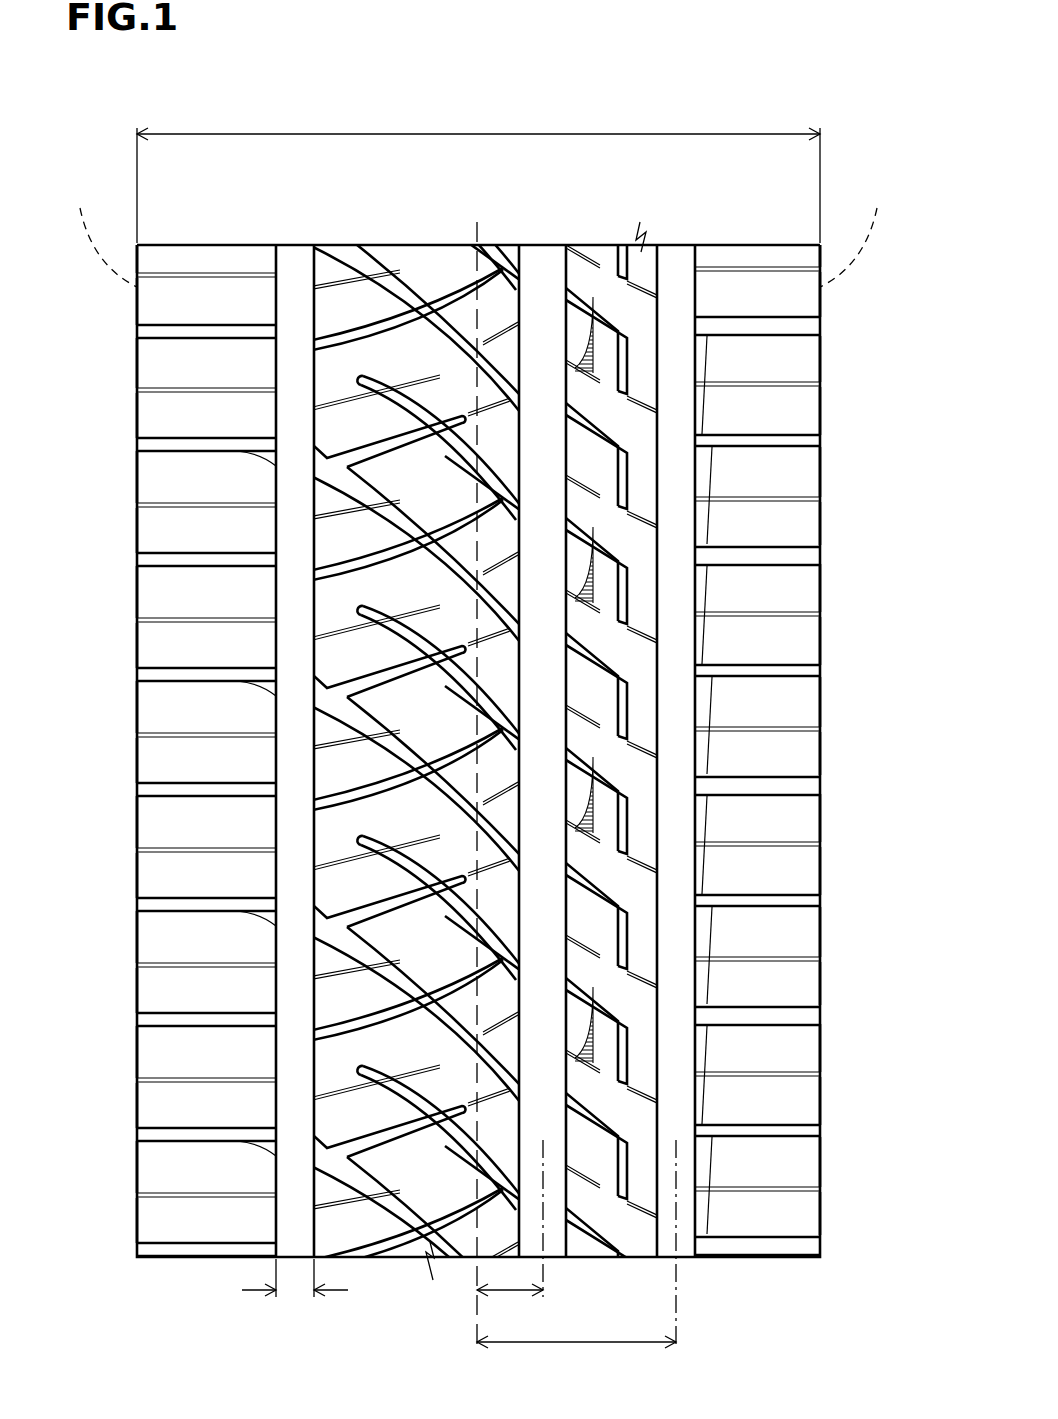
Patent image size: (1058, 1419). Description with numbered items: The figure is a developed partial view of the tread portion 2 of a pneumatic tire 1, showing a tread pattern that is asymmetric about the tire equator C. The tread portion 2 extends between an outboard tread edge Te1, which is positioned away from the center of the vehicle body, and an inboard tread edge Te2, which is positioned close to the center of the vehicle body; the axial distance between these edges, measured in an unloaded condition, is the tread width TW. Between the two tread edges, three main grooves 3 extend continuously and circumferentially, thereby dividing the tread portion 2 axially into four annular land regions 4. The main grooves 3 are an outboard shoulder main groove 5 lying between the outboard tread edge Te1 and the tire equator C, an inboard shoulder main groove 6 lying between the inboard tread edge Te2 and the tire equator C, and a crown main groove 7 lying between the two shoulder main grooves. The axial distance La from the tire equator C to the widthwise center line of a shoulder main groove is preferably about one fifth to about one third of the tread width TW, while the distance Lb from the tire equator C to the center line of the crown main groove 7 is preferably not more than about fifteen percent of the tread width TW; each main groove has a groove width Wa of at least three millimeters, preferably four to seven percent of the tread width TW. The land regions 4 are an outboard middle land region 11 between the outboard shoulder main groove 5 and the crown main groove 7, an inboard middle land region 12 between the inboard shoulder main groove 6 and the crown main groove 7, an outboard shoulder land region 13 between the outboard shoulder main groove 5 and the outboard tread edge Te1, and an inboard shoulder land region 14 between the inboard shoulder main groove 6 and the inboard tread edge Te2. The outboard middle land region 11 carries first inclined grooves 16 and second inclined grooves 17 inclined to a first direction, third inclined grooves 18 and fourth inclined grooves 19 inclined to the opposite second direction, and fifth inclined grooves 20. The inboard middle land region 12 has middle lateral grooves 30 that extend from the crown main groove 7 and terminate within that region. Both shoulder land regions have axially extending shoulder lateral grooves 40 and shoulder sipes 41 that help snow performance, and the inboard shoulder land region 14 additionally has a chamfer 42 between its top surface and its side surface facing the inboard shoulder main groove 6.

The pneumatic tire 1 is at (718, 226).
The tread portion 2 is at (245, 224).
The main grooves 3 is at (388, 758).
The land regions 4 is at (297, 709).
The outboard shoulder main groove 5 is at (293, 298).
The inboard shoulder main groove 6 is at (679, 290).
The crown main groove 7 is at (542, 290).
The outboard middle land region 11 is at (388, 300).
The inboard middle land region 12 is at (729, 751).
The outboard shoulder land region 13 is at (205, 298).
The inboard shoulder land region 14 is at (756, 298).
The first inclined grooves 16 is at (406, 518).
The second inclined grooves 17 is at (410, 640).
The third inclined grooves 18 is at (366, 785).
The fourth inclined grooves 19 is at (376, 900).
The fifth inclined grooves 20 is at (430, 1053).
The middle lateral grooves 30 is at (607, 895).
The shoulder lateral grooves 40 is at (192, 1020).
The shoulder sipes 41 is at (202, 1190).
The chamfer 42 is at (704, 693).
The outboard tread edge Te1 is at (96, 233).
The inboard tread edge Te2 is at (860, 233).
The tread width TW is at (478, 174).
The tire equator C is at (476, 769).
The groove width Wa is at (295, 1293).
The distance Lb is at (510, 1309).
The distance La is at (576, 1360).